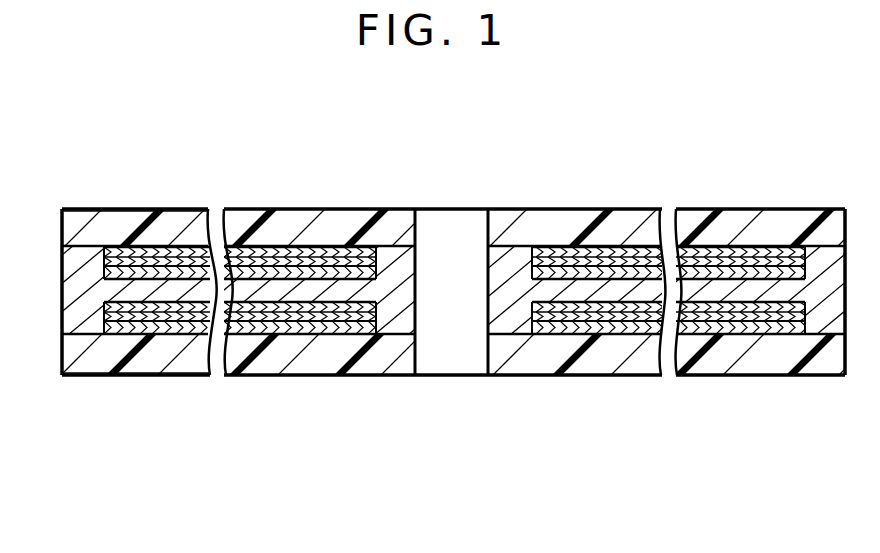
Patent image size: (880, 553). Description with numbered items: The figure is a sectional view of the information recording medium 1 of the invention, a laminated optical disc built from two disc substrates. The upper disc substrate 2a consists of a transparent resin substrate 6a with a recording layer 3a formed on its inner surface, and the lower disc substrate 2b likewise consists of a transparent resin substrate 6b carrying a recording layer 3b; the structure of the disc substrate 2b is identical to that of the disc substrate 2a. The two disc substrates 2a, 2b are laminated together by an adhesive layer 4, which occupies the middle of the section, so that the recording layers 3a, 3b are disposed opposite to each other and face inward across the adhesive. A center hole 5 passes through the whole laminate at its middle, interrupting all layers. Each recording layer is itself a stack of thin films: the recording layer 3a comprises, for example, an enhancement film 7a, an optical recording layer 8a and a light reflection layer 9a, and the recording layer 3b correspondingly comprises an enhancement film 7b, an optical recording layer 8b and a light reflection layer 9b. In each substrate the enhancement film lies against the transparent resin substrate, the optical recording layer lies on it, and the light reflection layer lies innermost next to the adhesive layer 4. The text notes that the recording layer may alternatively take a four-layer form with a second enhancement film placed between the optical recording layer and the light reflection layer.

The information recording medium 1 is at (603, 190).
The disc substrate 2a is at (322, 222).
The disc substrate 2b is at (322, 360).
The recording layer 3a is at (78, 138).
The recording layer 3b is at (222, 480).
The adhesive layer 4 is at (62, 306).
The center hole 5 is at (463, 347).
The transparent resin substrate 6a is at (62, 210).
The transparent resin substrate 6b is at (62, 352).
The enhancement film 7a is at (113, 250).
The enhancement film 7b is at (108, 334).
The optical recording layer 8a is at (162, 264).
The optical recording layer 8b is at (150, 316).
The light reflection layer 9a is at (200, 276).
The light reflection layer 9b is at (186, 305).